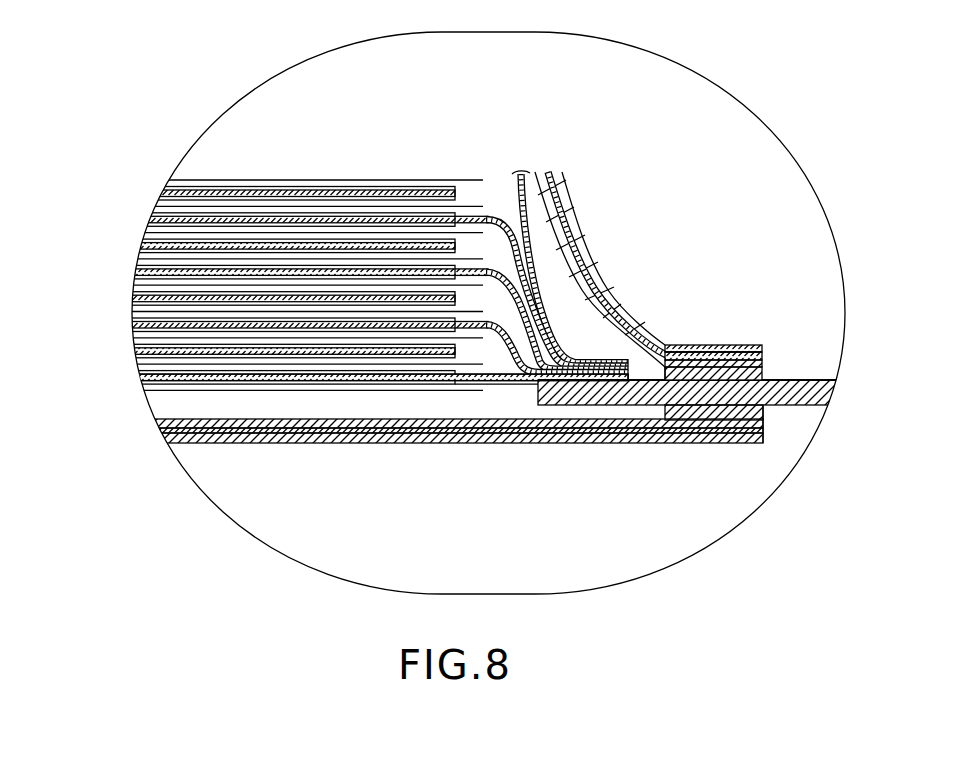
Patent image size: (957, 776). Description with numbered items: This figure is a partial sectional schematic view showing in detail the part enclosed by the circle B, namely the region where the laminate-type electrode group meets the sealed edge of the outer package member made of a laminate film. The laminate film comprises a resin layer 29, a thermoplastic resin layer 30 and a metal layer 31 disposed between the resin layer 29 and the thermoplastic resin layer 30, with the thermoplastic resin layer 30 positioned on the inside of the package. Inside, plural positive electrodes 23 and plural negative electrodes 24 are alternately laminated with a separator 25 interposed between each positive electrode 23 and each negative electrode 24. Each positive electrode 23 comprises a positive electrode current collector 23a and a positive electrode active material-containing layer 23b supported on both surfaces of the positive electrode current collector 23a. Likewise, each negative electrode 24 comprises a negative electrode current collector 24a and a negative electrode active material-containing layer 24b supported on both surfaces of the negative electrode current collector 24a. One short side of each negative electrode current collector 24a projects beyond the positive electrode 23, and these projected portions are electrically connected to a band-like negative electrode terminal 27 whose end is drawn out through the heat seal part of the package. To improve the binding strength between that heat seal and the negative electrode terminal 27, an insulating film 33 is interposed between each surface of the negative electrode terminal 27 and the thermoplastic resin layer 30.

The positive electrode 23 is at (246, 275).
The positive electrode current collector 23a is at (137, 351).
The positive electrode active material-containing layer 23b is at (137, 346).
The negative electrode 24 is at (350, 329).
The negative electrode current collector 24a is at (143, 378).
The negative electrode active material-containing layer 24b is at (141, 372).
The separator 25 is at (357, 179).
The negative electrode terminal 27 is at (806, 406).
The resin layer 29 is at (764, 346).
The thermoplastic resin layer 30 is at (464, 329).
The metal layer 31 is at (764, 354).
The insulating film 33 is at (758, 413).
The enlarged part B is at (560, 596).